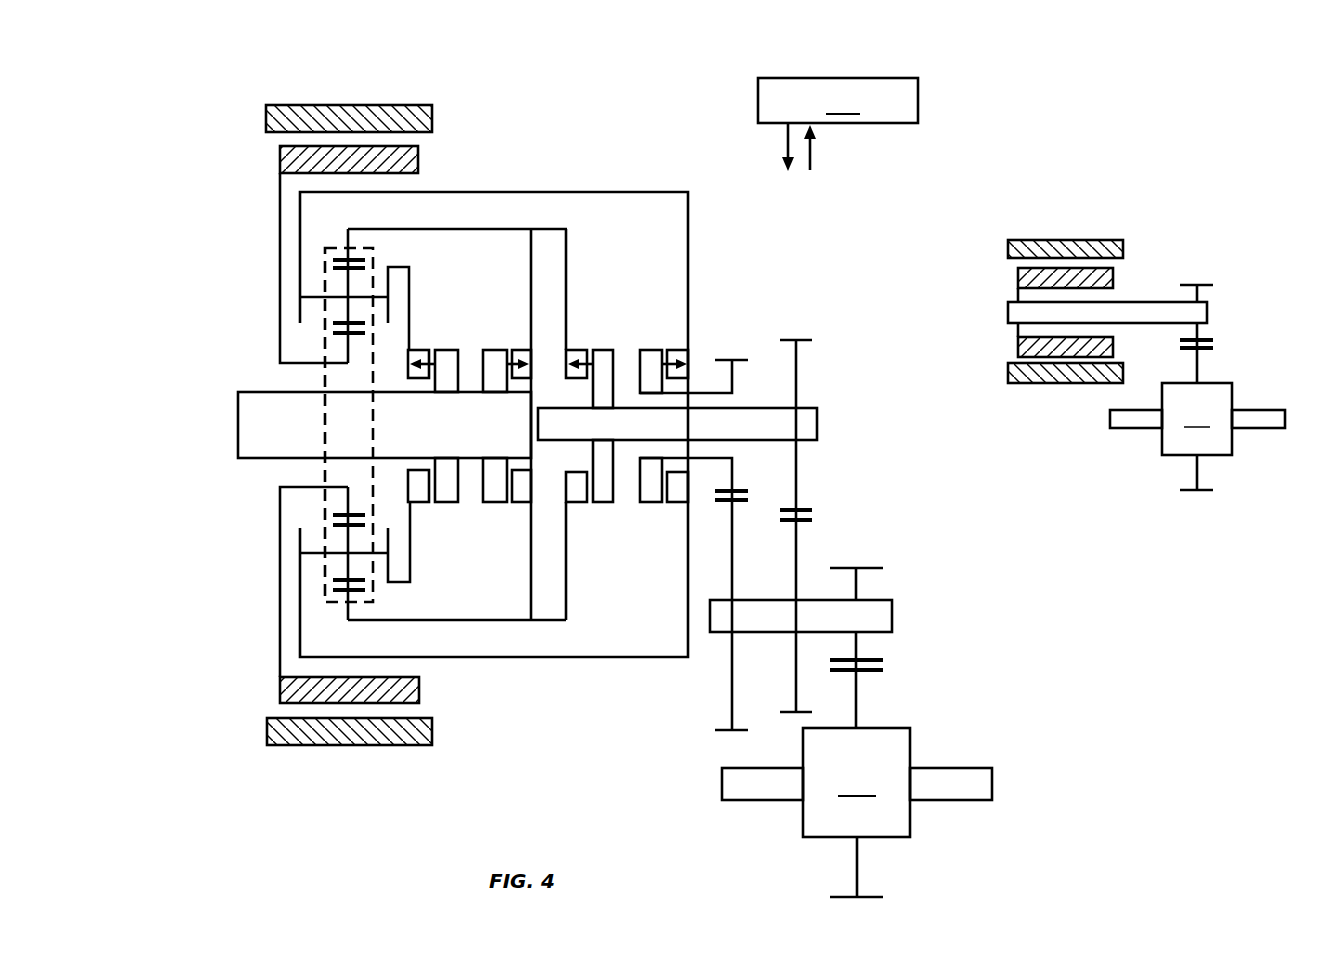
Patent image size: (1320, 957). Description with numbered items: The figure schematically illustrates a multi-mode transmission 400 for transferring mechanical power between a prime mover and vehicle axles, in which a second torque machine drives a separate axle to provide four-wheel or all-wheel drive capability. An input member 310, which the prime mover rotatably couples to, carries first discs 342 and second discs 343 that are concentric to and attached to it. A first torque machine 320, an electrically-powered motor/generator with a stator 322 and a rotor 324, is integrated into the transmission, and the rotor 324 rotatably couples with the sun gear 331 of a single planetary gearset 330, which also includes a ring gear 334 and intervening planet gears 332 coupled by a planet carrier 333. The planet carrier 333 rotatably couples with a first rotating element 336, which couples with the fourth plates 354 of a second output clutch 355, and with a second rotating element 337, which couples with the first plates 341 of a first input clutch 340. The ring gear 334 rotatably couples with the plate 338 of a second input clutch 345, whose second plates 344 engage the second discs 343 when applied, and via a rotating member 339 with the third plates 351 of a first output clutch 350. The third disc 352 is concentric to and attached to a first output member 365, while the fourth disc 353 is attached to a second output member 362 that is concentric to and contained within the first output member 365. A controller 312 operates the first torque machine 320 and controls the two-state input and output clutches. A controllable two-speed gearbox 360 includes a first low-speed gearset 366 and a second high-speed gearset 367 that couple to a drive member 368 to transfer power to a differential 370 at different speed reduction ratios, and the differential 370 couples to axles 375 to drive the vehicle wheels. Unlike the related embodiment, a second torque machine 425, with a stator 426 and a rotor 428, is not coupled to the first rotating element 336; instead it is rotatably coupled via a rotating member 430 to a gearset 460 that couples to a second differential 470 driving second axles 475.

The input member 310 is at (250, 425).
The controller 312 is at (904, 164).
The first torque machine 320 is at (305, 390).
The stator 322 is at (268, 118).
The rotor 324 is at (281, 160).
The single planetary gearset 330 is at (377, 425).
The sun gear 331 is at (333, 330).
The planet gears 332 is at (347, 293).
The planet carrier 333 is at (300, 310).
The ring gear 334 is at (333, 262).
The first rotating element 336 is at (690, 233).
The second rotating element 337 is at (410, 273).
The plate of the second input clutch 338 is at (534, 258).
The rotating member 339 is at (570, 258).
The first input clutch 340 is at (421, 344).
The first plates 341 is at (415, 380).
The first discs 342 is at (446, 380).
The second discs 343 is at (495, 380).
The second plates 344 is at (522, 348).
The second input clutch 345 is at (490, 344).
The first output clutch 350 is at (578, 344).
The third plates 351 is at (577, 378).
The third disc 352 is at (613, 392).
The fourth disc 353 is at (640, 375).
The fourth plates 354 is at (677, 426).
The second output clutch 355 is at (652, 344).
The controllable two-speed gearbox 360 is at (574, 535).
The second output member 362 is at (707, 392).
The first output member 365 is at (818, 422).
The first low-speed gearset 366 is at (745, 493).
The second high-speed gearset 367 is at (810, 515).
The drive member 368 is at (893, 615).
The differential 370 is at (856, 812).
The axles 375 is at (760, 788).
The multi-mode transmission 400 is at (879, 124).
The second torque machine 425 is at (1158, 348).
The stator 426 is at (1123, 248).
The rotor 428 is at (1113, 278).
The rotating member 430 is at (1207, 312).
The gearset 460 is at (1205, 332).
The second differential 470 is at (1197, 436).
The second axles 475 is at (1133, 423).